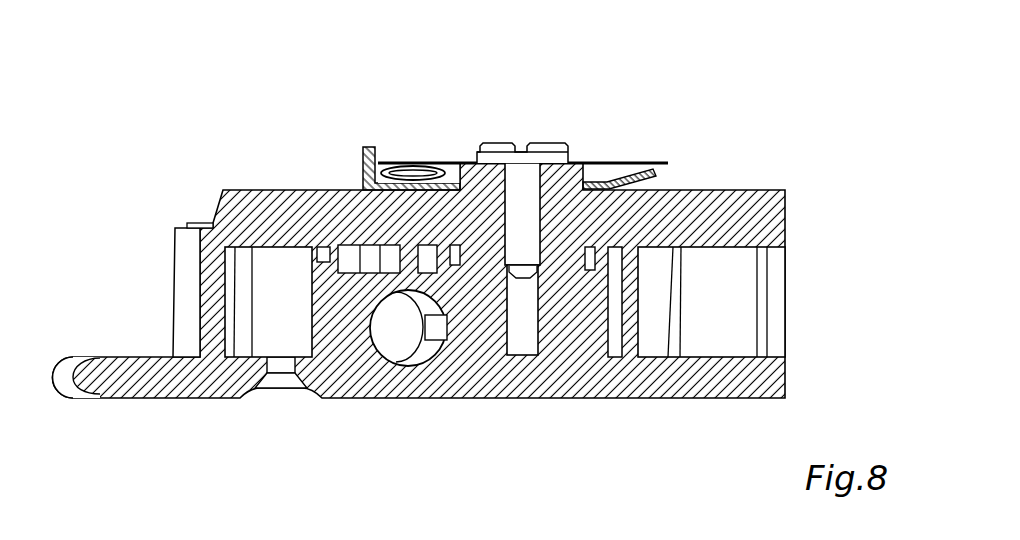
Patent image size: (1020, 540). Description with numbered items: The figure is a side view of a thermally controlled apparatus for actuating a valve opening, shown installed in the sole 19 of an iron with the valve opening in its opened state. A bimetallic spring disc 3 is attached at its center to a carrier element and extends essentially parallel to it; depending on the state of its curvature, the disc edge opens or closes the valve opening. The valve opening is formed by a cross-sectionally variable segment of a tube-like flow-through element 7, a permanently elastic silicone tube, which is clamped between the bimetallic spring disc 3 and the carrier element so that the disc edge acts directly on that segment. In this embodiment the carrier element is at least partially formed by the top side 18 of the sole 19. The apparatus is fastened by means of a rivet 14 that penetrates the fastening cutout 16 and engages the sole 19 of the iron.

The bimetallic spring disc 3 is at (455, 165).
The flow-through element 7 is at (412, 172).
The rivet 14 is at (518, 195).
The fastening cutout 16 is at (580, 168).
The top side of the sole 18 is at (718, 192).
The sole of the iron 19 is at (281, 218).